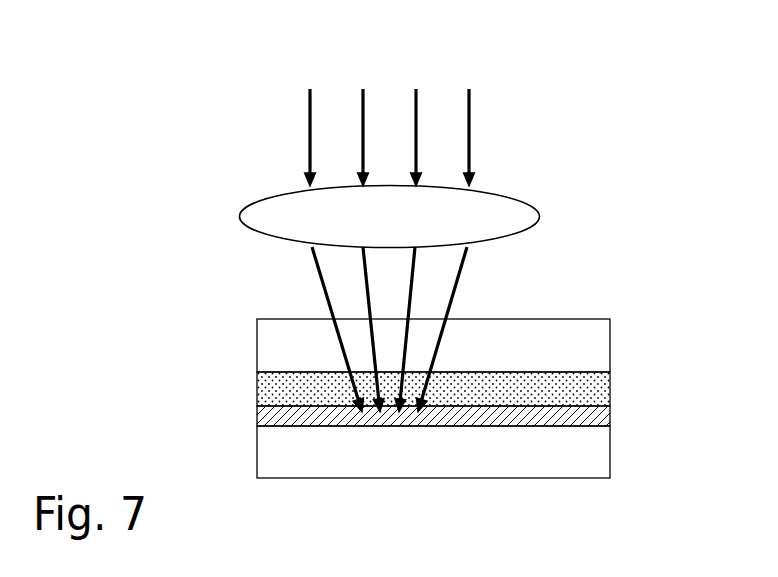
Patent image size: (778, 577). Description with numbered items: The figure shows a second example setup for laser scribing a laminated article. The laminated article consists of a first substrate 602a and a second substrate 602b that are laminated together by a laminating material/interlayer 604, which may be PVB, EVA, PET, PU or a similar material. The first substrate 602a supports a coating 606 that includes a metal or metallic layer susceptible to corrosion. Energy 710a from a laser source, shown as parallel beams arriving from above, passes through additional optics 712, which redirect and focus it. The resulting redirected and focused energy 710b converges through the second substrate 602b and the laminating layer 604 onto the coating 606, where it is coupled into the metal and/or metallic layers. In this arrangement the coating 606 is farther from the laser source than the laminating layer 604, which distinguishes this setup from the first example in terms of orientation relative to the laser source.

The energy from a laser source 710a is at (496, 106).
The additional optics 712 is at (540, 217).
The redirected and focused energy 710b is at (480, 292).
The second substrate 602b is at (610, 346).
The laminating material/interlayer 604 is at (610, 389).
The coating 606 is at (610, 417).
The first substrate 602a is at (610, 451).